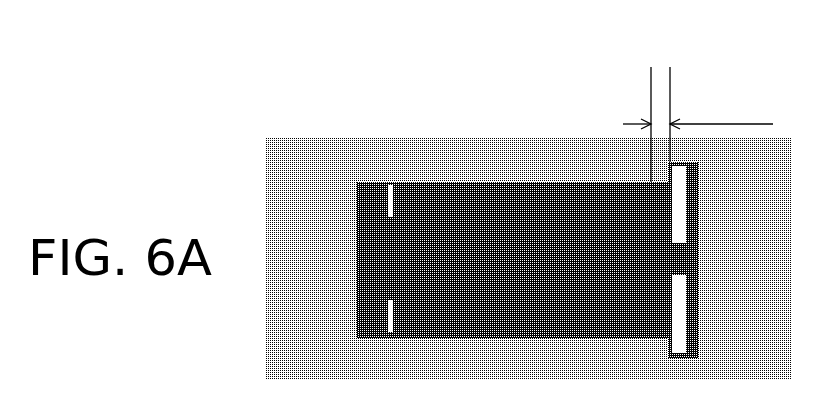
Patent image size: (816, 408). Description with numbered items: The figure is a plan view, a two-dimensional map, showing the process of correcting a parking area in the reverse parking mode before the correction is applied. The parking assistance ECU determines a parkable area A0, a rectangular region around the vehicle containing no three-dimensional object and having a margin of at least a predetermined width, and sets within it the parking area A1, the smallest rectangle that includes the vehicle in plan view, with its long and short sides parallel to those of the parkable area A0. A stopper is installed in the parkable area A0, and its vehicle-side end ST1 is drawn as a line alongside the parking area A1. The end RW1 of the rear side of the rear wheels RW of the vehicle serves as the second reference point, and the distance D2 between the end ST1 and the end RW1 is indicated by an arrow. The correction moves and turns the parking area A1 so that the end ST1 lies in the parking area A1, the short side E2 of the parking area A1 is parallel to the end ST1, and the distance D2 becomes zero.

The parkable area A0 is at (305, 138).
The parking area A1 is at (472, 182).
The short side of the parking area E2 is at (698, 269).
The end of the rear side of the rear wheels RW1 is at (651, 77).
The end of the stopper ST1 is at (671, 72).
The rear wheels RW is at (621, 181).
The distance between the stopper end and the rear wheel end D2 is at (721, 111).